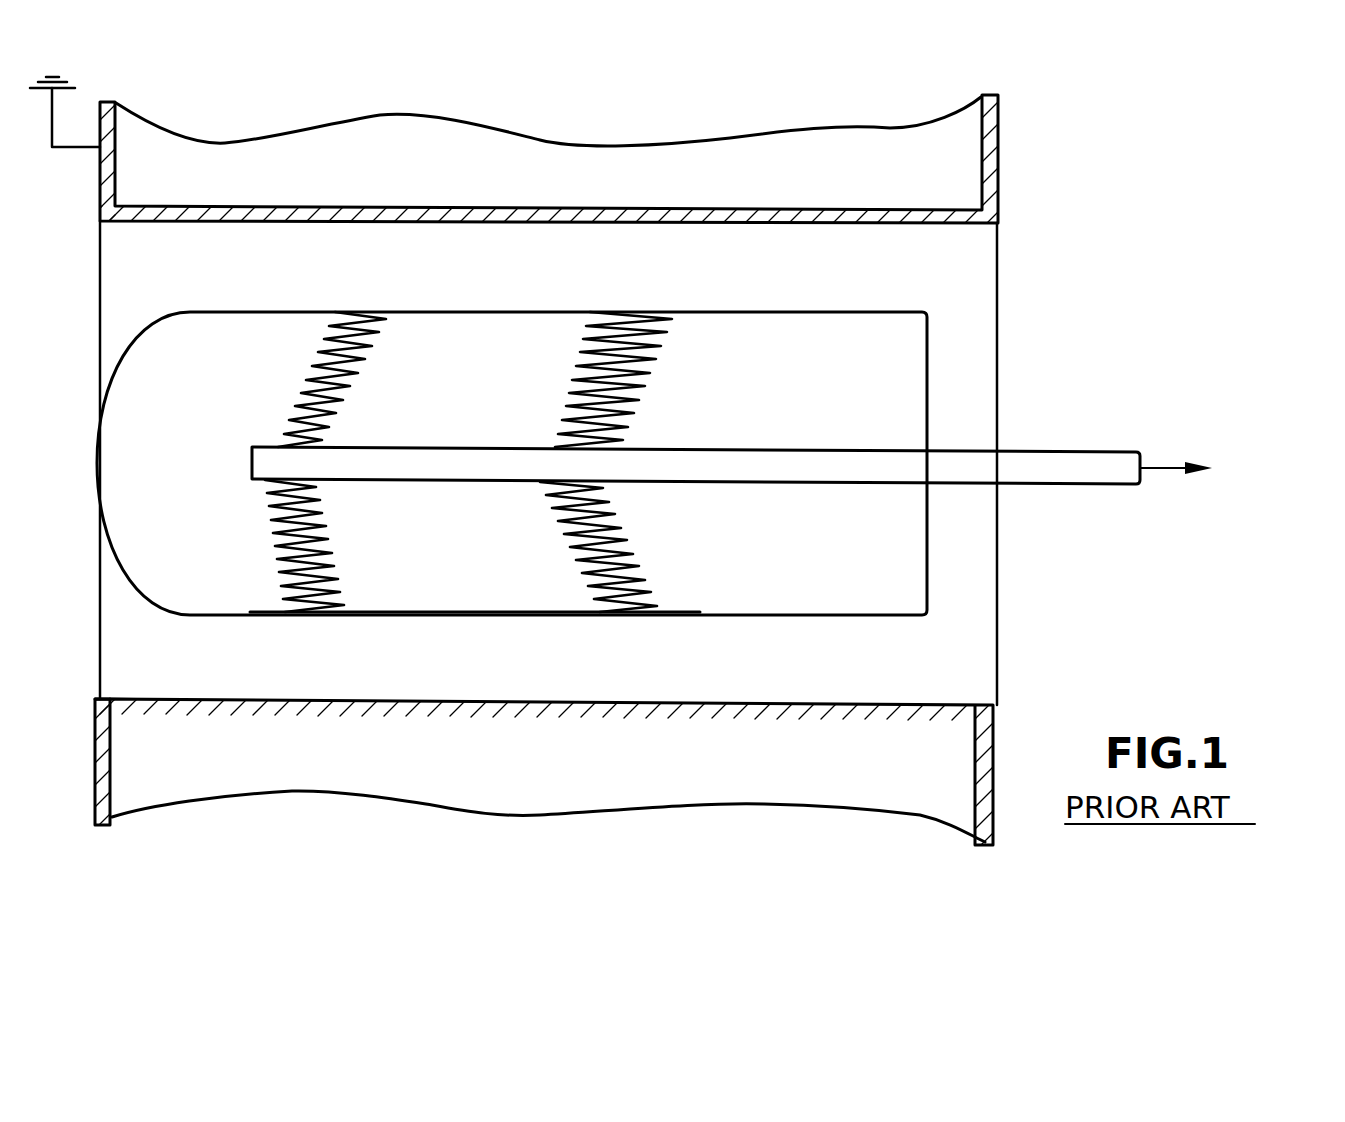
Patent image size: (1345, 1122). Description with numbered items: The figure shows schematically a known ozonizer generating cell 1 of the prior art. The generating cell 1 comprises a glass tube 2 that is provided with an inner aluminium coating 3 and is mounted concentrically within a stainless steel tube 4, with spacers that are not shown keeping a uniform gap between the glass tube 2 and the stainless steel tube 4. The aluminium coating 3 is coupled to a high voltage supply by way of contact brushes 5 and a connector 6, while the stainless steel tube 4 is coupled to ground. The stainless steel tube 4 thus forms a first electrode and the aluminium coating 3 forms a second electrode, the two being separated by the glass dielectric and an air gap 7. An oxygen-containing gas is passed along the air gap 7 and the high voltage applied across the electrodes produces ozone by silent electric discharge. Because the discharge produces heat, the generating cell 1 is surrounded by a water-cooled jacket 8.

The generating cell 1 is at (884, 303).
The glass tube 2 is at (714, 312).
The inner aluminium coating 3 is at (448, 610).
The stainless steel tube 4 is at (950, 705).
The contact brushes 5 is at (360, 378).
The connector 6 is at (1060, 462).
The air gap 7 is at (903, 382).
The water-cooled jacket 8 is at (987, 140).